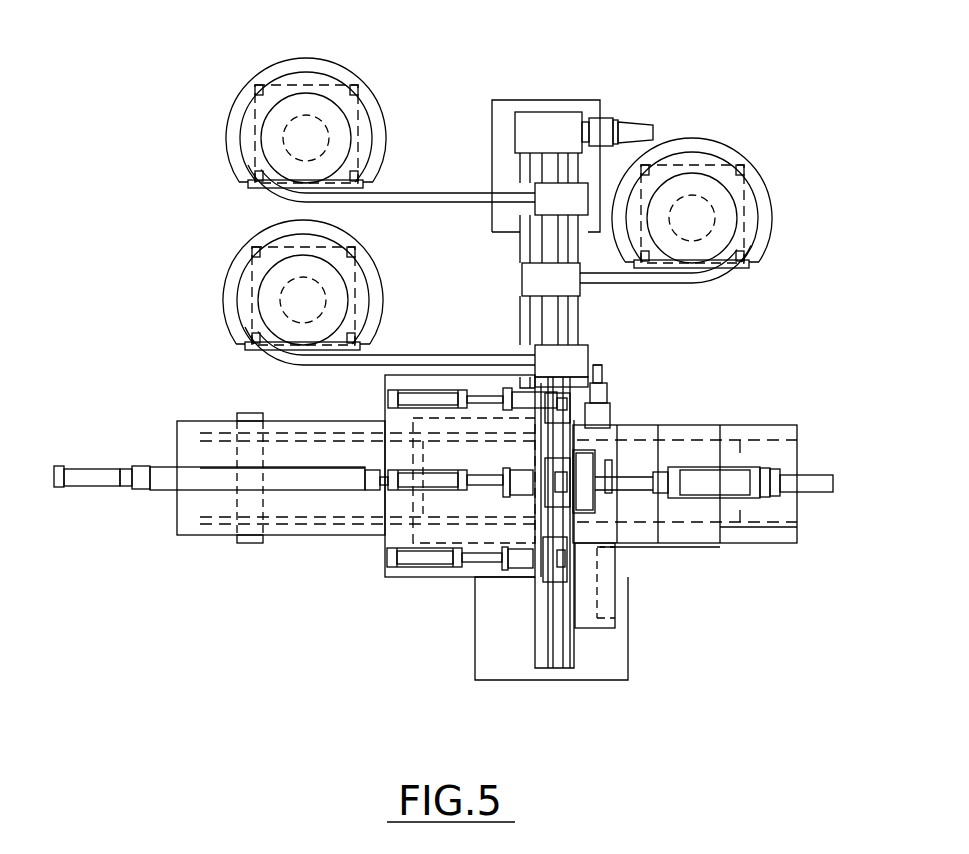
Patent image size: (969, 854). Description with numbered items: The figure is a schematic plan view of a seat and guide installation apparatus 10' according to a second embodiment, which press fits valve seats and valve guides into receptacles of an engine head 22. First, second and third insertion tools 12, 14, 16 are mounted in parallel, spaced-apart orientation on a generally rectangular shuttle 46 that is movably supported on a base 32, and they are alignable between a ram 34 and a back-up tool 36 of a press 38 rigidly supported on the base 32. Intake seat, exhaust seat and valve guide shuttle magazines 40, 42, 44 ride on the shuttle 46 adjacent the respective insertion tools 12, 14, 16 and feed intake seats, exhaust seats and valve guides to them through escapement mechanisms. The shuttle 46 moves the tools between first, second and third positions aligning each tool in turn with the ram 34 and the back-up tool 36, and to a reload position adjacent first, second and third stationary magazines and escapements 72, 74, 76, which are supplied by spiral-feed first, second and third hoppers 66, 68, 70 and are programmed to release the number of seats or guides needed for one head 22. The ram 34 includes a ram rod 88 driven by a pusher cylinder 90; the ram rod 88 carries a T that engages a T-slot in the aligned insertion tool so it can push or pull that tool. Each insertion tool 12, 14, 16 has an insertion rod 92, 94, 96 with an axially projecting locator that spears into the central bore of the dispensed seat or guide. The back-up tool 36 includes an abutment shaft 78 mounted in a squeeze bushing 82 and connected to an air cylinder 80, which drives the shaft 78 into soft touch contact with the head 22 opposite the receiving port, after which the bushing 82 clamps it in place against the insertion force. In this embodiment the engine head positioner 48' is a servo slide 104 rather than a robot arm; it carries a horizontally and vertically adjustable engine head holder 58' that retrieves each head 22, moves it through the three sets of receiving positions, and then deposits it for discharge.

The apparatus 10' is at (629, 629).
The first insertion tool 12 is at (407, 390).
The second insertion tool 14 is at (403, 492).
The third insertion tool 16 is at (410, 570).
The engine head 22 is at (587, 467).
The base 32 is at (197, 528).
The ram 34 is at (182, 477).
The back-up tool 36 is at (727, 480).
The press 38 is at (305, 470).
The intake seat shuttle magazine 40 is at (607, 360).
The exhaust seat shuttle magazine 42 is at (617, 409).
The valve guide shuttle magazine 44 is at (560, 558).
The shuttle 46 is at (455, 573).
The engine head positioner 48' is at (648, 427).
The engine head holder 58' is at (642, 569).
The first hopper 66 is at (276, 72).
The second hopper 68 is at (727, 155).
The third hopper 70 is at (242, 265).
The first stationary magazine and escapement 72 is at (543, 205).
The second stationary magazine and escapement 74 is at (540, 270).
The third stationary magazine and escapement 76 is at (580, 352).
The abutment shaft 78 is at (668, 478).
The air cylinder 80 is at (815, 478).
The squeeze bushing 82 is at (722, 445).
The ram rod 88 is at (383, 490).
The pusher cylinder 90 is at (88, 473).
The first insertion rod 92 is at (475, 393).
The second insertion rod 94 is at (488, 476).
The third insertion rod 96 is at (482, 560).
The servo slide 104 is at (598, 362).